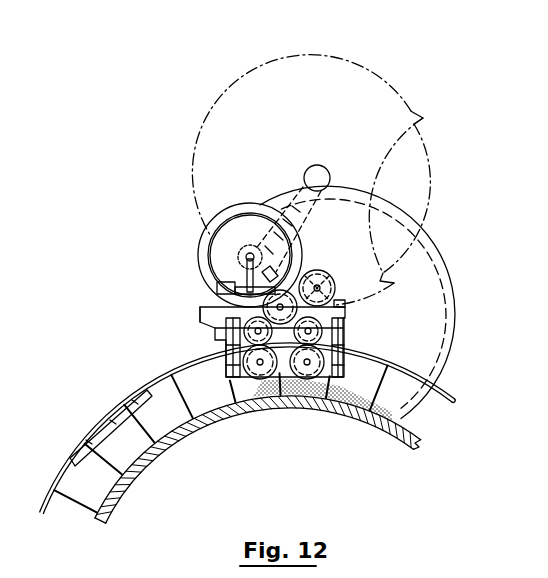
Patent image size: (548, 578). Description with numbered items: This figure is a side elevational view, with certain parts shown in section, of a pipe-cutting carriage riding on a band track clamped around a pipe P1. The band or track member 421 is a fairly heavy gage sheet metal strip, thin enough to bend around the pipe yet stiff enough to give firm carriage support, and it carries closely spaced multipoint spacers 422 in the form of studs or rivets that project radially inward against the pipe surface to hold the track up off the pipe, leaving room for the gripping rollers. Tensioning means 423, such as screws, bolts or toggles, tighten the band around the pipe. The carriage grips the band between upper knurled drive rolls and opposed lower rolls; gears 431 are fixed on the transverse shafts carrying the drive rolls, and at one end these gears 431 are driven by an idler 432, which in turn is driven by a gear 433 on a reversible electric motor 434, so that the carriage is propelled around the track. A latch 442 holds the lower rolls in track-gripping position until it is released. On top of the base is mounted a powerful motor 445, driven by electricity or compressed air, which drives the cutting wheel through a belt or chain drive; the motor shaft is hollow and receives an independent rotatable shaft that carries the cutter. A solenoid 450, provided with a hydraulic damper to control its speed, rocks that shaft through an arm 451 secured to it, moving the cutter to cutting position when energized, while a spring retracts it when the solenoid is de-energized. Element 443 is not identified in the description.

The pipe P1 is at (205, 428).
The band or track member 421 is at (176, 368).
The multipoint spacers 422 is at (150, 432).
The tensioning means 423 is at (97, 428).
The gears 431 is at (200, 329).
The idler 432 is at (200, 309).
The gear 433 is at (319, 269).
The reversible electric motor 434 is at (336, 281).
The latch 442 is at (214, 366).
The side plate 443 is at (344, 330).
The motor 445 is at (250, 203).
The solenoid 450 is at (217, 287).
The arm 451 is at (218, 270).